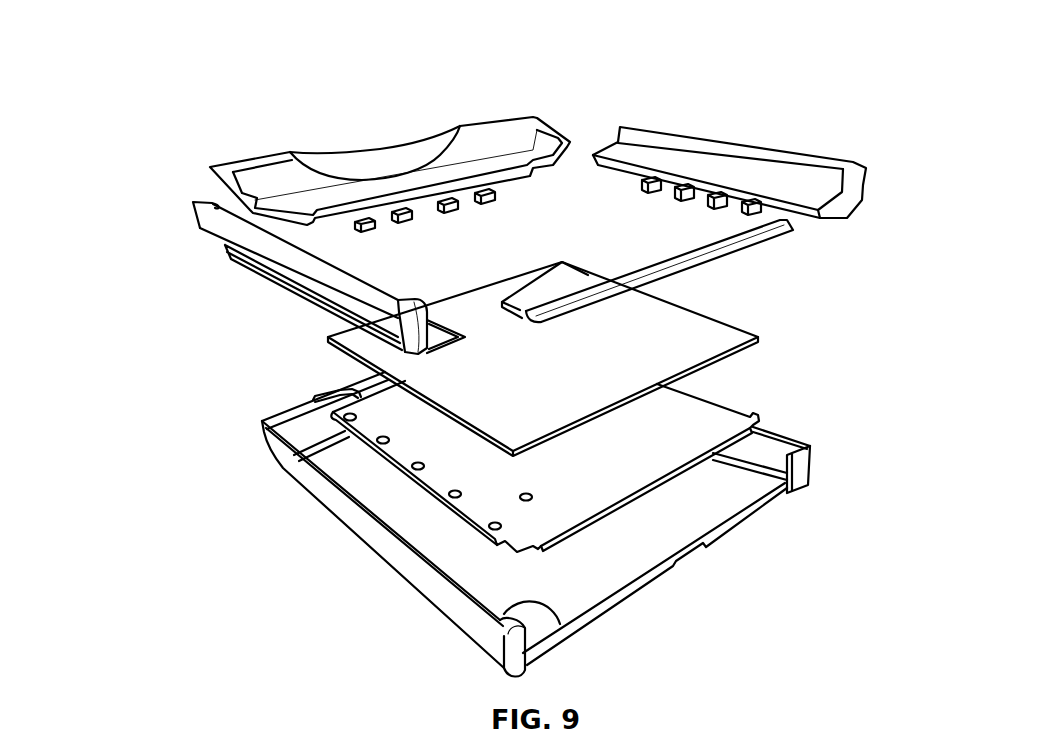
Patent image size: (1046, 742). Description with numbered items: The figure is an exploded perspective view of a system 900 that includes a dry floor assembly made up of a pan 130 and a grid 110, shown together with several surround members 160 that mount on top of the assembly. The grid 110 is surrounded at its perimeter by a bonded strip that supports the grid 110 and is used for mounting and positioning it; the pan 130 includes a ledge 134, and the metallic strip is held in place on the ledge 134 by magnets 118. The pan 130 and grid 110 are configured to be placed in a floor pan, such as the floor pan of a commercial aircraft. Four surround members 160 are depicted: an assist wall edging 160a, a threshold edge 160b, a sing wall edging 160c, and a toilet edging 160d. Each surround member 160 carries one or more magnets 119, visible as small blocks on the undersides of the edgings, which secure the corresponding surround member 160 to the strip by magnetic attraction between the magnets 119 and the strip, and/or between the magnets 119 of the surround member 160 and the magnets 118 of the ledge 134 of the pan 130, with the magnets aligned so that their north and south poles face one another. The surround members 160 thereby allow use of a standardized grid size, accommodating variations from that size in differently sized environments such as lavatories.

The system 900 is at (843, 44).
The surround member 160 is at (142, 246).
The assist wall edging 160a is at (298, 271).
The threshold edge 160b is at (757, 244).
The sing wall edging 160c is at (780, 152).
The toilet edging 160d is at (476, 124).
The magnets 119 is at (395, 224).
The grid 110 is at (733, 340).
The pan 130 is at (745, 407).
The ledge 134 is at (400, 455).
The magnets 118 is at (372, 453).